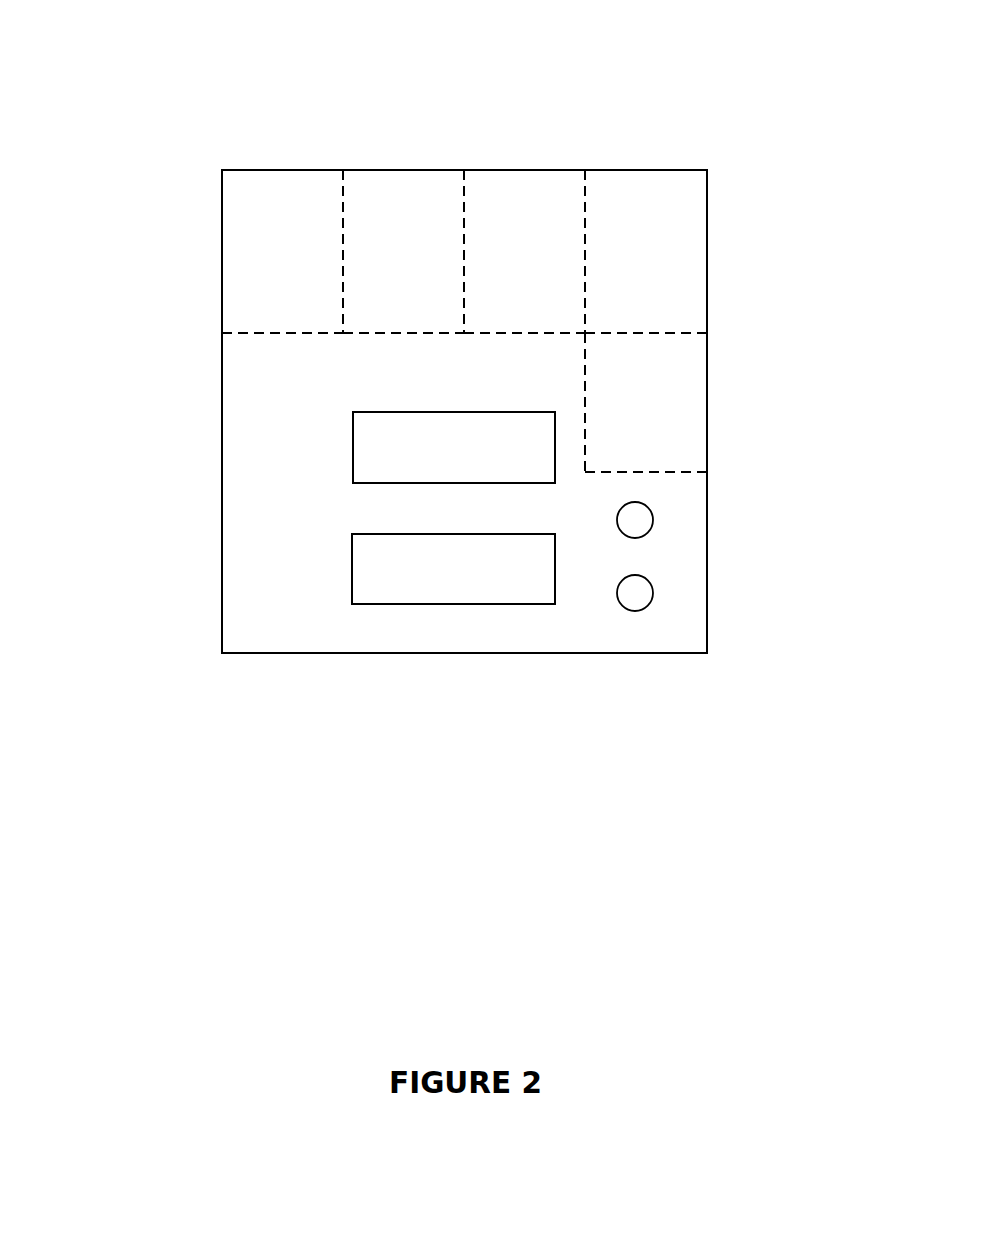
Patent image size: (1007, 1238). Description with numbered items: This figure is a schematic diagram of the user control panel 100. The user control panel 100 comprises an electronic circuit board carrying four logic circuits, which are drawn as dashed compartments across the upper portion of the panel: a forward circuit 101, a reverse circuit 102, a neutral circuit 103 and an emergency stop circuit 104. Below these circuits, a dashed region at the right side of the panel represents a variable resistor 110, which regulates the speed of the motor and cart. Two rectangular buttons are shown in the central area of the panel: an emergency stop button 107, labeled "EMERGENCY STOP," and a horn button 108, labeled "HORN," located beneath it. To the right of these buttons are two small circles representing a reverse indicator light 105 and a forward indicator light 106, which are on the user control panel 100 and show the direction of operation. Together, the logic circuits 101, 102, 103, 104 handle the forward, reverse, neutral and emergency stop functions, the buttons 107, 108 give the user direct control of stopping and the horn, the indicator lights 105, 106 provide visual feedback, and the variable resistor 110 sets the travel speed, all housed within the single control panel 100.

The user control panel 100 is at (268, 623).
The forward circuit 101 is at (277, 202).
The reverse circuit 102 is at (409, 208).
The neutral circuit 103 is at (507, 207).
The emergency stop circuit 104 is at (642, 195).
The reverse indicator light 105 is at (643, 517).
The forward indicator light 106 is at (635, 593).
The emergency stop button 107 is at (368, 460).
The horn button 108 is at (483, 588).
The variable resistor 110 is at (683, 397).